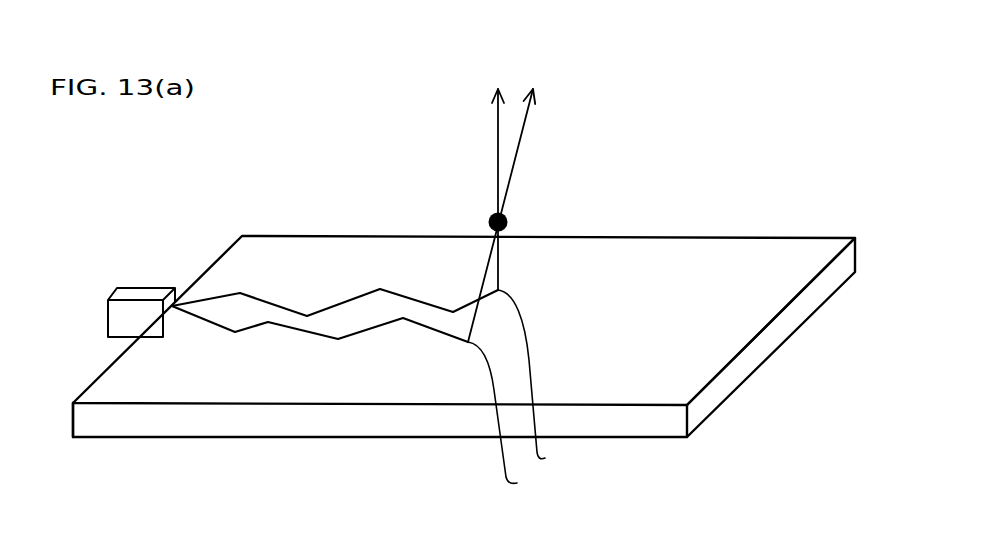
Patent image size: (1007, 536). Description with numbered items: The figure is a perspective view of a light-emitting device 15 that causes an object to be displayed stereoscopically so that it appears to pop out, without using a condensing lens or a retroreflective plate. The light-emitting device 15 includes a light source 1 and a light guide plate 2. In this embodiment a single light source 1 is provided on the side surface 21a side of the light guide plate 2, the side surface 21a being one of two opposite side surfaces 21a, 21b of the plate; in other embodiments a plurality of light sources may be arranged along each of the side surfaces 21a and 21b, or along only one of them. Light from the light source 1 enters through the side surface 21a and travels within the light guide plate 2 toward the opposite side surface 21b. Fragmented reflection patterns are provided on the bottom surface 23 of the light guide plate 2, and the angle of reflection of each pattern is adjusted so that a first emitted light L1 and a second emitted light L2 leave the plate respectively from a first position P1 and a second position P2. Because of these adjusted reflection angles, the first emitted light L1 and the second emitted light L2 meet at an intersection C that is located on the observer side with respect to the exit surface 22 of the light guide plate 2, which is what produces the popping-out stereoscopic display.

The light source 1 is at (141, 294).
The light guide plate 2 is at (753, 236).
The light-emitting device 15 is at (775, 112).
The side surface 21a is at (71, 417).
The side surface 21b is at (745, 367).
The exit surface 22 is at (735, 332).
The bottom surface 23 is at (445, 438).
The intersection C is at (510, 222).
The first emitted light L1 is at (495, 110).
The second emitted light L2 is at (530, 118).
The first position P1 is at (535, 381).
The second position P2 is at (505, 420).